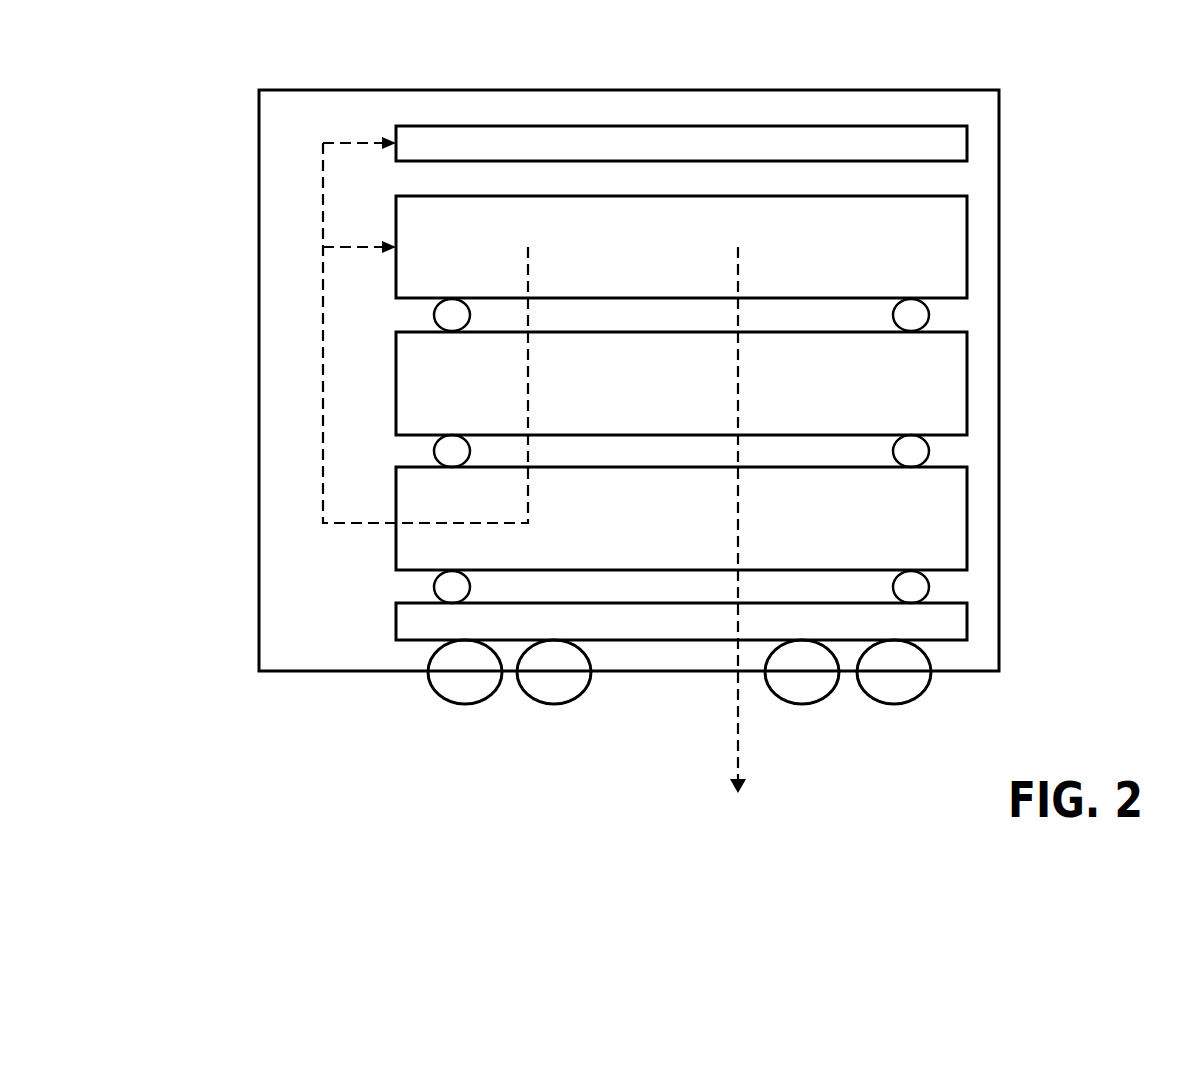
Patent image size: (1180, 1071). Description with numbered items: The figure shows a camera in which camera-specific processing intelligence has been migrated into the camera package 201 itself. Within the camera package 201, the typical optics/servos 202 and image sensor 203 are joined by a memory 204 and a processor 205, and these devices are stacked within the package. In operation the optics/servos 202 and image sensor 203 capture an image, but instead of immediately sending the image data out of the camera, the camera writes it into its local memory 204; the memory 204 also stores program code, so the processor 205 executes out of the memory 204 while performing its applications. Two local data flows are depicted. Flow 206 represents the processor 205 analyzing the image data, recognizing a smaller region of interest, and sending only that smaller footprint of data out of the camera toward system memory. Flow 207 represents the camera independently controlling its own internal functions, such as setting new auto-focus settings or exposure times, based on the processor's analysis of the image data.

The camera package 201 is at (258, 158).
The optics/servos 202 is at (937, 144).
The image sensor 203 is at (937, 247).
The memory 204 is at (937, 383).
The processor 205 is at (937, 522).
The flow 206 is at (738, 720).
The flow 207 is at (367, 523).